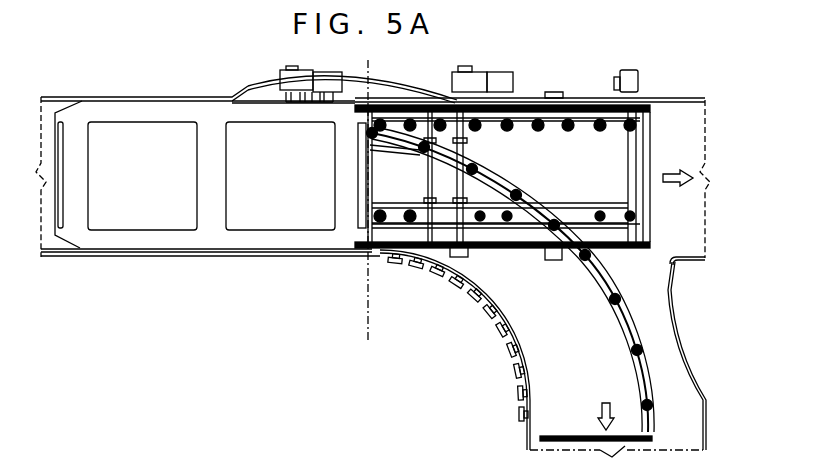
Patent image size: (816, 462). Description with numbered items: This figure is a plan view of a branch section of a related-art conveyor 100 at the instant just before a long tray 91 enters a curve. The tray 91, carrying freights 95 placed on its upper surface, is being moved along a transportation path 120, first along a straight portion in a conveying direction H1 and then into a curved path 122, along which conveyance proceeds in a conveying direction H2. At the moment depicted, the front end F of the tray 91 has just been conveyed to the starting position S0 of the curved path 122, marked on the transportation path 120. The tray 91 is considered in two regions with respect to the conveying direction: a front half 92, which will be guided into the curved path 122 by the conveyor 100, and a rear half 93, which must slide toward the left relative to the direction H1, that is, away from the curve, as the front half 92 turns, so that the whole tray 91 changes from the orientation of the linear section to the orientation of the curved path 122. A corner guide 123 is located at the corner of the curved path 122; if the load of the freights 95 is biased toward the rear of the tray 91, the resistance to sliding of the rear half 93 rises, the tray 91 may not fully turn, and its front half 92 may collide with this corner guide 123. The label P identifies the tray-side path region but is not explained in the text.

The conveyor 100 is at (688, 84).
The transportation path 120 is at (97, 98).
The tray 91 is at (125, 115).
The front half of the tray 92 is at (343, 117).
The rear half of the tray 93 is at (93, 238).
The freights 95 is at (166, 134).
The curved path 122 is at (685, 370).
The corner guide 123 is at (672, 264).
The conveyance path P is at (212, 172).
The front end of the tray F is at (368, 179).
The starting position of the curved path S0 is at (368, 310).
The conveying direction on the linear path H1 is at (680, 160).
The conveying direction on the curved path H2 is at (612, 412).